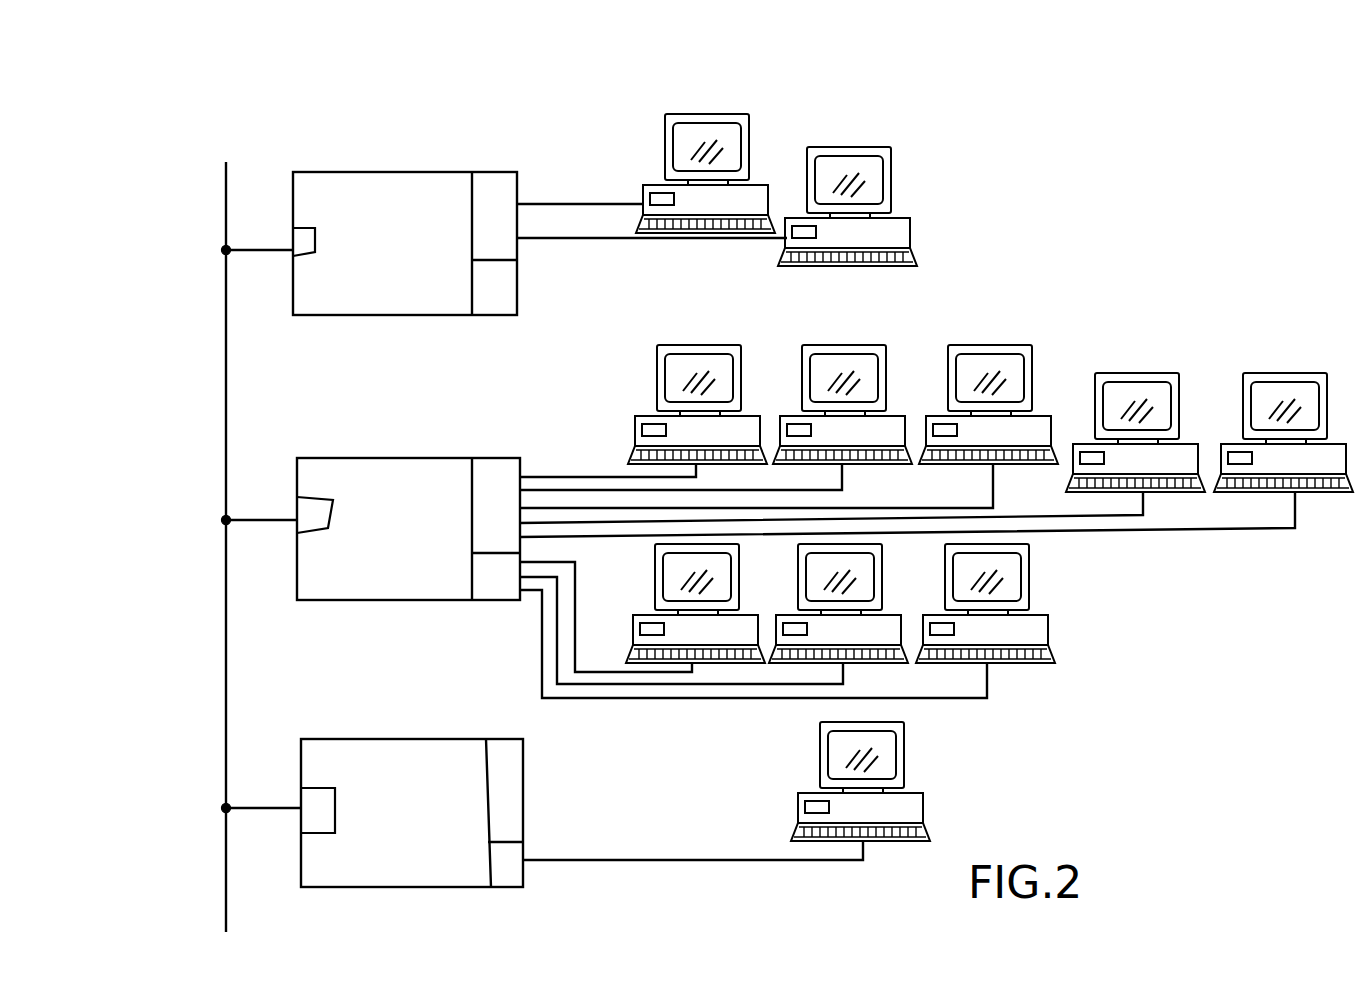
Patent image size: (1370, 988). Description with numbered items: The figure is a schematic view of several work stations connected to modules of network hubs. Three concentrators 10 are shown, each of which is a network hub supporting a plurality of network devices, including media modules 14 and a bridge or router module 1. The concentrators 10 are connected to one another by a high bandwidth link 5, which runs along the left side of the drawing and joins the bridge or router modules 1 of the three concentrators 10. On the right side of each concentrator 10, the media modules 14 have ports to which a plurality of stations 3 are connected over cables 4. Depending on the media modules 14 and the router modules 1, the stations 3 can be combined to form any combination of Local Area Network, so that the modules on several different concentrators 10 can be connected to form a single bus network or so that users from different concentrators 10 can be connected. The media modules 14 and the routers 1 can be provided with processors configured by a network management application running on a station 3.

The bridge or router module 1 is at (303, 232).
The station 3 is at (692, 130).
The cable 4 is at (692, 862).
The high bandwidth link 5 is at (225, 378).
The concentrator 10 is at (418, 172).
The media module 14 is at (510, 248).